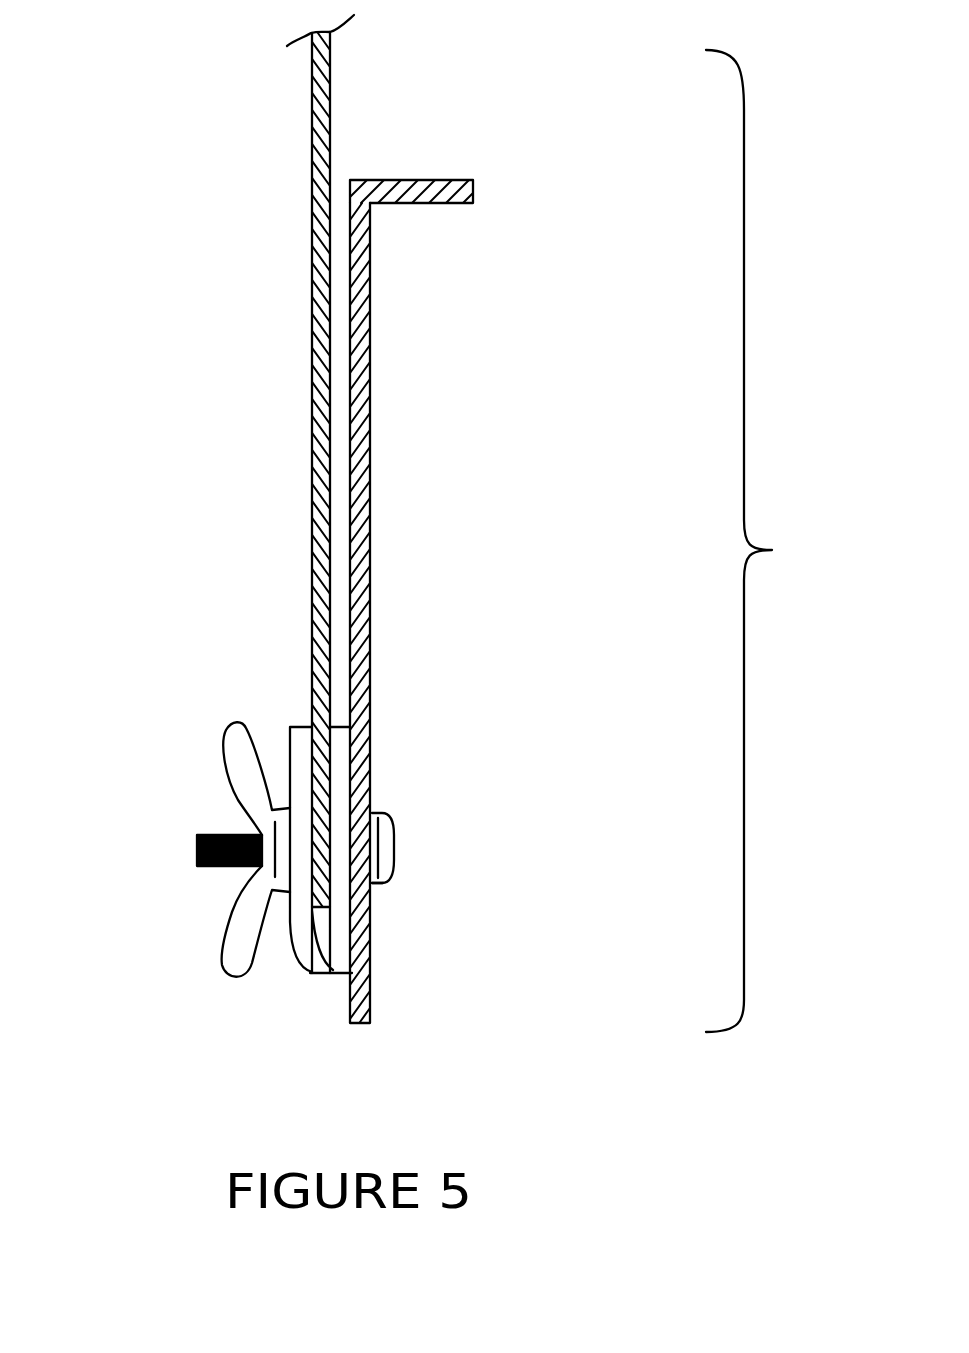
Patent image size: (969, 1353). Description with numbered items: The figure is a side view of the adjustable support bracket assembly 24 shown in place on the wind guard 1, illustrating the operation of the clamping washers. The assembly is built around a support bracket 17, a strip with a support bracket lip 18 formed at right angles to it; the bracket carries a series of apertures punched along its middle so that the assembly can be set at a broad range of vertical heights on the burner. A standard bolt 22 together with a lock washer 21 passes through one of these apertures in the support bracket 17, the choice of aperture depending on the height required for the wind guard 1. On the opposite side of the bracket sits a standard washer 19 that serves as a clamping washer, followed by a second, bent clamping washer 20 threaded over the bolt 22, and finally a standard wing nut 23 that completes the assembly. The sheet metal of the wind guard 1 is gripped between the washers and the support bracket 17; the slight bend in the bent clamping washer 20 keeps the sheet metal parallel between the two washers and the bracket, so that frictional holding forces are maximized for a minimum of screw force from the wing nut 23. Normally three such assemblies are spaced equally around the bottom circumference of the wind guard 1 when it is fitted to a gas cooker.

The wind guard 1 is at (310, 121).
The support bracket 17 is at (370, 350).
The support bracket lip 18 is at (446, 180).
The standard washer 19 is at (337, 975).
The bent clamping washer 20 is at (297, 965).
The lock washer 21 is at (375, 885).
The bolt 22 is at (197, 848).
The wing nut 23 is at (226, 727).
The adjustable support bracket assembly 24 is at (794, 541).